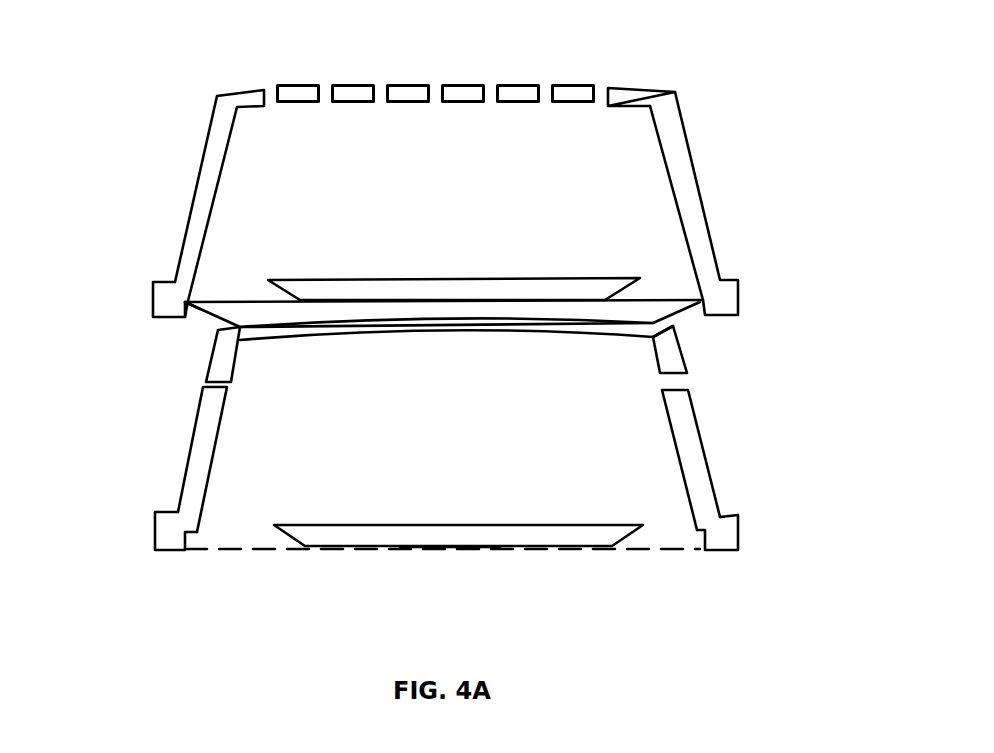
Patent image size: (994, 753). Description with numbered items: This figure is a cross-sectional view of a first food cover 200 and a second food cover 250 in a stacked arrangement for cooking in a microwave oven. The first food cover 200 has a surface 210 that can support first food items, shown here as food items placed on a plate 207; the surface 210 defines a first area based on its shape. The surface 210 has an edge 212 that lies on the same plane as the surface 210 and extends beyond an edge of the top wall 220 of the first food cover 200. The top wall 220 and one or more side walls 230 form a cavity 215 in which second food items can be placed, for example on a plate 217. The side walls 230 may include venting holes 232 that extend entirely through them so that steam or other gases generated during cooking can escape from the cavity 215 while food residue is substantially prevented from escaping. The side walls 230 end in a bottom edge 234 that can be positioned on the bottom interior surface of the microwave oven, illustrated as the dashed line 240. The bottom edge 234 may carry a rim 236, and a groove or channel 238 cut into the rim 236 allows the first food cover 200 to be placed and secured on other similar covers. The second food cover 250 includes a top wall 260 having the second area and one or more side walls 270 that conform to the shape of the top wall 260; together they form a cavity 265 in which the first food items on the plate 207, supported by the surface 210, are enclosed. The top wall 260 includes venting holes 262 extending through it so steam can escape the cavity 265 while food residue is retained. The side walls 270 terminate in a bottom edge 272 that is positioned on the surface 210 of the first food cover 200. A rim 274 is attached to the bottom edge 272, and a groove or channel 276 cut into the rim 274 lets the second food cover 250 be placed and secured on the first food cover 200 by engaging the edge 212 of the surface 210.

The first food cover 200 is at (110, 437).
The plate 207 is at (480, 276).
The surface 210 is at (670, 310).
The edge 212 is at (185, 302).
The cavity 215 is at (452, 445).
The plate 217 is at (497, 523).
The top wall 220 is at (440, 330).
The side walls 230 is at (693, 443).
The venting holes 232 is at (222, 382).
The bottom edge 234 is at (172, 553).
The rim 236 is at (153, 520).
The groove or channel 238 is at (188, 540).
The dashed line 240 is at (450, 552).
The second food cover 250 is at (127, 170).
The top wall 260 is at (677, 90).
The venting holes 262 is at (268, 97).
The cavity 265 is at (447, 180).
The side walls 270 is at (678, 187).
The bottom edge 272 is at (165, 318).
The rim 274 is at (150, 299).
The groove or channel 276 is at (195, 310).